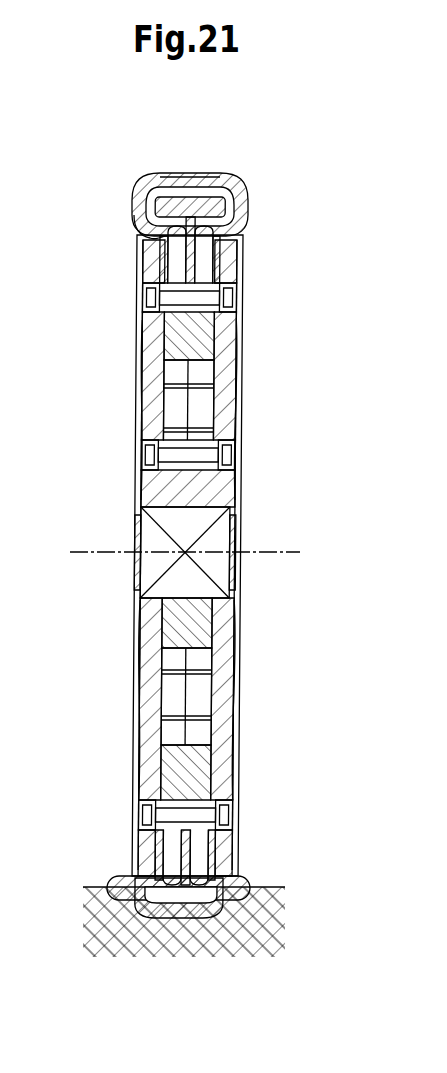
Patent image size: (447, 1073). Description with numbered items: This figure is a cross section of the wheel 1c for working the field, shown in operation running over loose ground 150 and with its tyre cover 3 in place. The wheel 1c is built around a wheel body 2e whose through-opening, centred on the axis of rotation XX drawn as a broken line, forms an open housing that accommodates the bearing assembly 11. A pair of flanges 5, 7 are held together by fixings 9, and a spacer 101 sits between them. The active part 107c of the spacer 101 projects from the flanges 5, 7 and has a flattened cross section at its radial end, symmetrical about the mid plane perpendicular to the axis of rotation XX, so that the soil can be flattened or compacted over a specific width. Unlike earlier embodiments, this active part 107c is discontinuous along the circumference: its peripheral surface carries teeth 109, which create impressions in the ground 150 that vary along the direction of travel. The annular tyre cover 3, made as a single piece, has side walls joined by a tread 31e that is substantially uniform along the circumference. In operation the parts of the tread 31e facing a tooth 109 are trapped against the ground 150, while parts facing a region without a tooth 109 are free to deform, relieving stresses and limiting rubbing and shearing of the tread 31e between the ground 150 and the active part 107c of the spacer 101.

The wheel 1c is at (253, 168).
The wheel body 2e is at (268, 405).
The tyre cover 3 is at (135, 187).
The flange 5 is at (152, 365).
The flange 7 is at (228, 358).
The fixings 9 is at (232, 300).
The bearing assembly 11 is at (150, 540).
The tread 31e is at (168, 178).
The spacer 101 is at (195, 336).
The active part 107c is at (233, 205).
The teeth 109 is at (196, 175).
The ground 150 is at (95, 887).
The axis of rotation XX is at (278, 552).